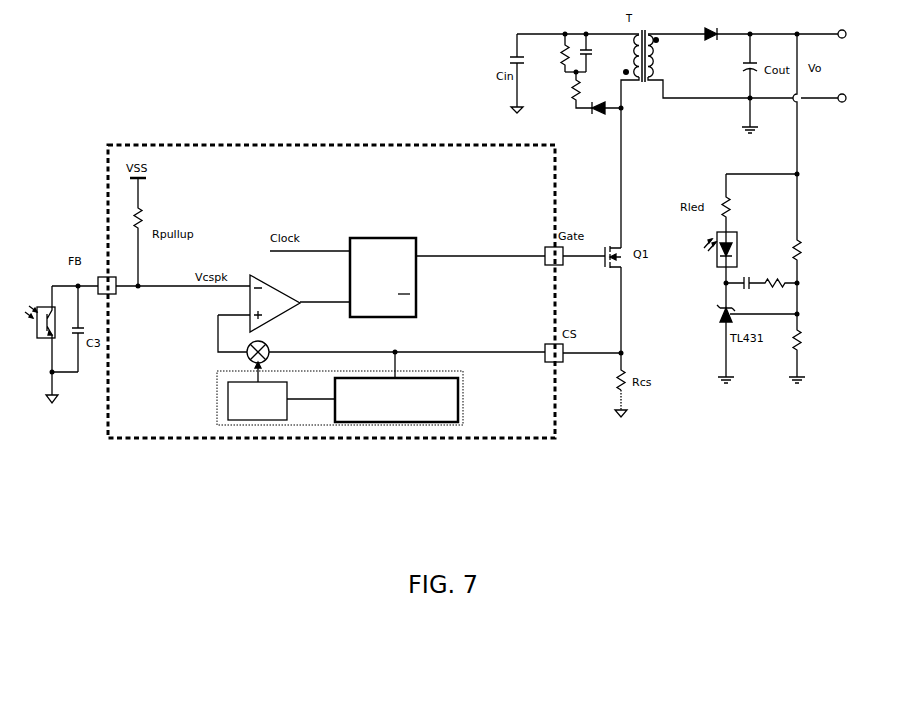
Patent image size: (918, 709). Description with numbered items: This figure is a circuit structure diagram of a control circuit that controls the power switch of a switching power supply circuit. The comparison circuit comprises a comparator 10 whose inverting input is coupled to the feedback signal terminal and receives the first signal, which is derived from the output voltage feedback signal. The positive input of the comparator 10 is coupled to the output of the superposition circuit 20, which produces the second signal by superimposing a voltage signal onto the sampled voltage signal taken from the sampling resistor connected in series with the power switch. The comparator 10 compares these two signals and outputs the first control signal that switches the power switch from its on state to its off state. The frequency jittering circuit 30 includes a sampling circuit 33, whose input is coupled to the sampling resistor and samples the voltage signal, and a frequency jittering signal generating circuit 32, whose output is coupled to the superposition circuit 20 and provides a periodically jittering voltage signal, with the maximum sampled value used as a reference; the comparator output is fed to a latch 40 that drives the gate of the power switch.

The comparator 10 is at (290, 292).
The superposition circuit 20 is at (268, 345).
The frequency jittering circuit 30 is at (443, 371).
The frequency jittering signal generating circuit 32 is at (217, 400).
The sampling circuit 33 is at (463, 412).
The SR flip-flop 40 is at (392, 238).